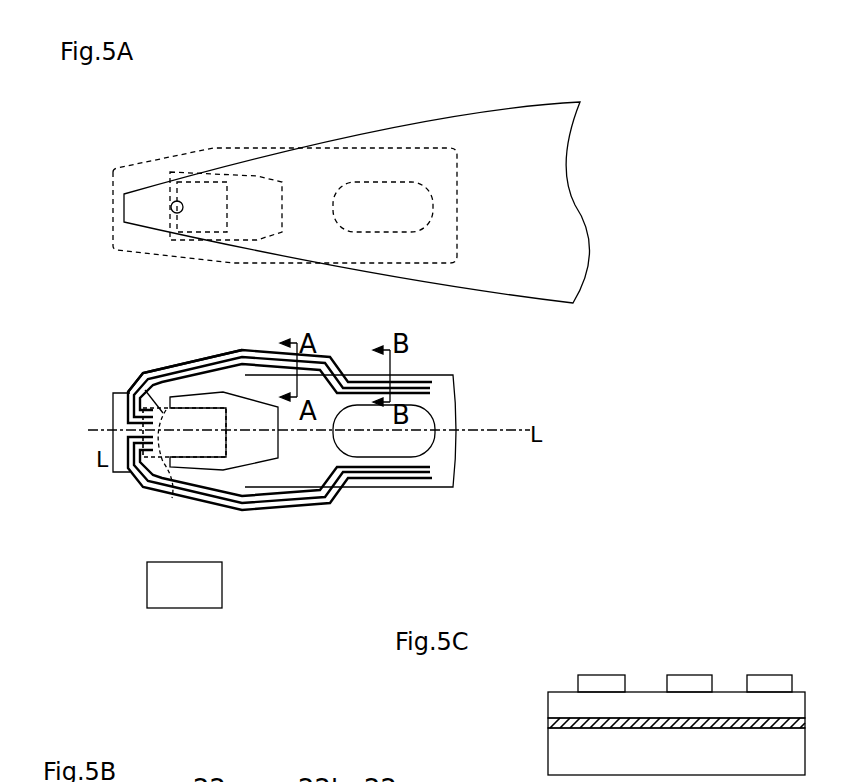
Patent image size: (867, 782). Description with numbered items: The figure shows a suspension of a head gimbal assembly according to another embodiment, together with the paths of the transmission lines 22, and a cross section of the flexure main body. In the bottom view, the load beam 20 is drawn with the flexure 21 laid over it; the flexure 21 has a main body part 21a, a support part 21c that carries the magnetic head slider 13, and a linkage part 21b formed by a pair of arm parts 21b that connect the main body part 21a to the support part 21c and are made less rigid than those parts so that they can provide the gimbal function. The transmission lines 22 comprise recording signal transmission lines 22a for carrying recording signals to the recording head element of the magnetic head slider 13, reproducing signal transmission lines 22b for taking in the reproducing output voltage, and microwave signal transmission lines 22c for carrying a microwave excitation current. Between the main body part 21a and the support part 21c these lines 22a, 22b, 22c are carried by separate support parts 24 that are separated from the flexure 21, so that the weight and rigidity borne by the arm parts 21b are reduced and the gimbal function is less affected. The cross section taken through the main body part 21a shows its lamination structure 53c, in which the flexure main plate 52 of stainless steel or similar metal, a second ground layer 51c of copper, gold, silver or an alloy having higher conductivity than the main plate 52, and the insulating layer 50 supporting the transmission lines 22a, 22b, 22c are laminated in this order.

In FIG. 5A, the load beam 20 is at (543, 112).
In FIG. 5A, the flexure 21 is at (261, 150).
In FIG. 5A, the main body part 21a is at (340, 505).
In FIG. 5A, the linkage part 21b is at (255, 392).
In FIG. 5A, the support part 21c is at (150, 370).
In FIG. 5A, the transmission lines 22 is at (555, 323).
In FIG. 5A, the recording signal transmission lines 22a is at (412, 381).
In FIG. 5C, the recording signal transmission lines 22a is at (767, 675).
In FIG. 5A, the reproducing signal transmission lines 22b is at (418, 387).
In FIG. 5C, the reproducing signal transmission lines 22b is at (687, 675).
In FIG. 5A, the microwave signal transmission lines 22c is at (432, 397).
In FIG. 5C, the microwave signal transmission lines 22c is at (597, 675).
In FIG. 5A, the separate support parts 24 is at (197, 365).
In FIG. 5A, the magnetic head slider 13 is at (170, 498).
In FIG. 5C, the insulating layer 50 is at (555, 697).
In FIG. 5C, the second ground layer 51c is at (553, 724).
In FIG. 5C, the flexure main plate 52 is at (555, 753).
In FIG. 5C, the lamination structure 53c is at (603, 732).